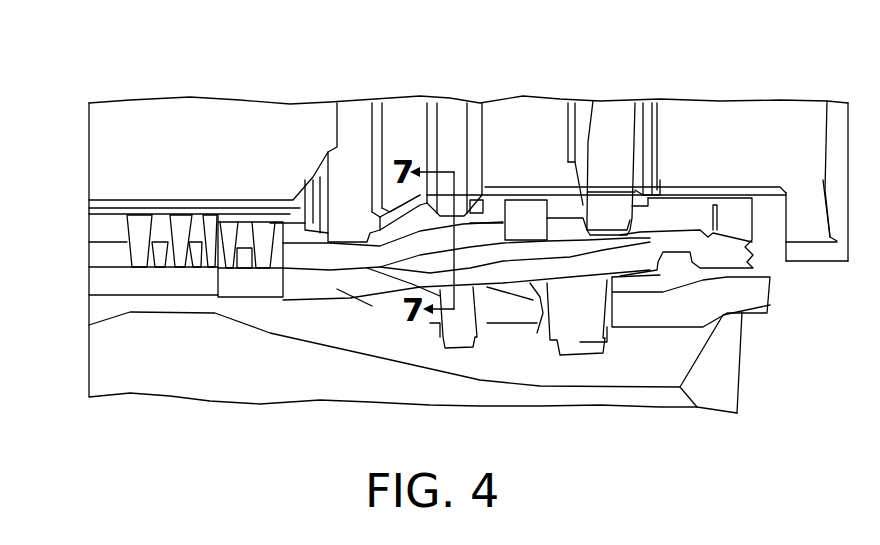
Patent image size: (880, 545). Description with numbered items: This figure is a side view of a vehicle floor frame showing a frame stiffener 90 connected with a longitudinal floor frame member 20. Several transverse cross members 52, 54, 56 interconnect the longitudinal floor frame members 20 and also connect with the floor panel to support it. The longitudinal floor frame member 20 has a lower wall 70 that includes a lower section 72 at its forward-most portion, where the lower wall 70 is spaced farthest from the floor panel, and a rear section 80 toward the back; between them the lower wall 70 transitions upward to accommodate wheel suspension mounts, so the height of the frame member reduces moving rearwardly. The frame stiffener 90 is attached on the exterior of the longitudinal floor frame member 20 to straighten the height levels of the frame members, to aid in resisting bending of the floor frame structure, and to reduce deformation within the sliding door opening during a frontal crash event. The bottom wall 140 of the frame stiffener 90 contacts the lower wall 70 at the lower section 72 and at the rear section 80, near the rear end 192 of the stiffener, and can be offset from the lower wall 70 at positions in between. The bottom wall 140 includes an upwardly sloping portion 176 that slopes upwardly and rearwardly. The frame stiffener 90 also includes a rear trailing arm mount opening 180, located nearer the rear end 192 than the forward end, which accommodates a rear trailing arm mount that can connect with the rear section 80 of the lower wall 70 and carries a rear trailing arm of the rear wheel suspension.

The longitudinal floor frame member 20 is at (107, 257).
The cross member 52 is at (617, 112).
The cross member 54 is at (458, 112).
The cross member 56 is at (355, 112).
The lower wall 70 is at (137, 284).
The lower section 72 is at (212, 285).
The rear section 80 is at (773, 250).
The frame stiffener 90 is at (290, 257).
The bottom wall 140 is at (218, 280).
The upwardly sloping portion 176 is at (410, 278).
The rear trailing arm mount opening 180 is at (663, 258).
The rear end 192 is at (753, 217).